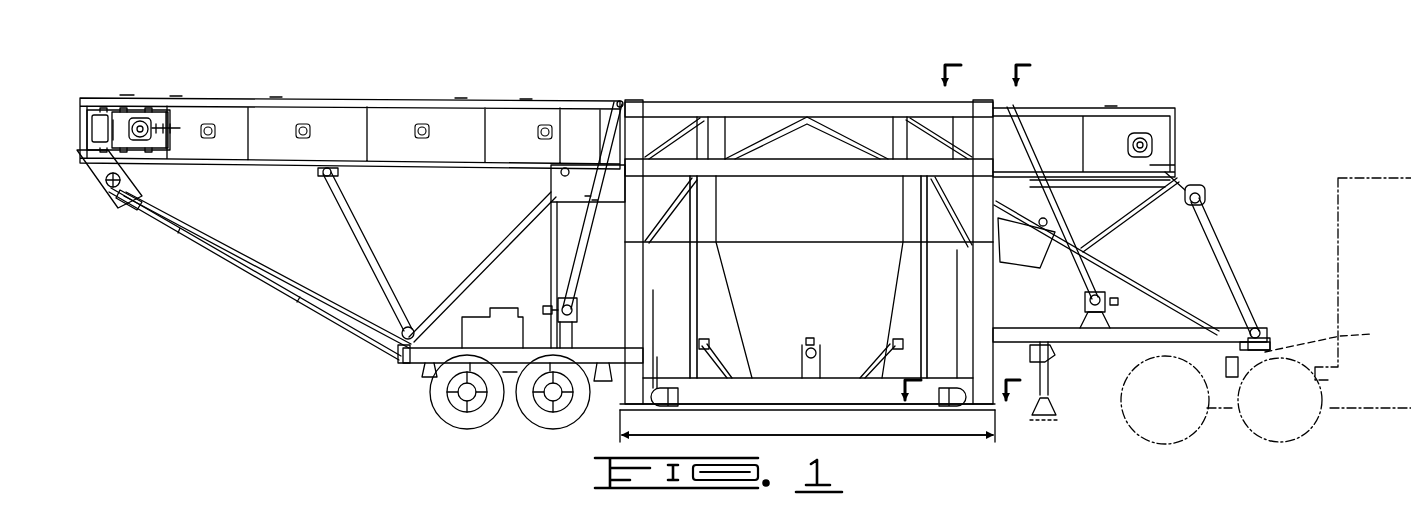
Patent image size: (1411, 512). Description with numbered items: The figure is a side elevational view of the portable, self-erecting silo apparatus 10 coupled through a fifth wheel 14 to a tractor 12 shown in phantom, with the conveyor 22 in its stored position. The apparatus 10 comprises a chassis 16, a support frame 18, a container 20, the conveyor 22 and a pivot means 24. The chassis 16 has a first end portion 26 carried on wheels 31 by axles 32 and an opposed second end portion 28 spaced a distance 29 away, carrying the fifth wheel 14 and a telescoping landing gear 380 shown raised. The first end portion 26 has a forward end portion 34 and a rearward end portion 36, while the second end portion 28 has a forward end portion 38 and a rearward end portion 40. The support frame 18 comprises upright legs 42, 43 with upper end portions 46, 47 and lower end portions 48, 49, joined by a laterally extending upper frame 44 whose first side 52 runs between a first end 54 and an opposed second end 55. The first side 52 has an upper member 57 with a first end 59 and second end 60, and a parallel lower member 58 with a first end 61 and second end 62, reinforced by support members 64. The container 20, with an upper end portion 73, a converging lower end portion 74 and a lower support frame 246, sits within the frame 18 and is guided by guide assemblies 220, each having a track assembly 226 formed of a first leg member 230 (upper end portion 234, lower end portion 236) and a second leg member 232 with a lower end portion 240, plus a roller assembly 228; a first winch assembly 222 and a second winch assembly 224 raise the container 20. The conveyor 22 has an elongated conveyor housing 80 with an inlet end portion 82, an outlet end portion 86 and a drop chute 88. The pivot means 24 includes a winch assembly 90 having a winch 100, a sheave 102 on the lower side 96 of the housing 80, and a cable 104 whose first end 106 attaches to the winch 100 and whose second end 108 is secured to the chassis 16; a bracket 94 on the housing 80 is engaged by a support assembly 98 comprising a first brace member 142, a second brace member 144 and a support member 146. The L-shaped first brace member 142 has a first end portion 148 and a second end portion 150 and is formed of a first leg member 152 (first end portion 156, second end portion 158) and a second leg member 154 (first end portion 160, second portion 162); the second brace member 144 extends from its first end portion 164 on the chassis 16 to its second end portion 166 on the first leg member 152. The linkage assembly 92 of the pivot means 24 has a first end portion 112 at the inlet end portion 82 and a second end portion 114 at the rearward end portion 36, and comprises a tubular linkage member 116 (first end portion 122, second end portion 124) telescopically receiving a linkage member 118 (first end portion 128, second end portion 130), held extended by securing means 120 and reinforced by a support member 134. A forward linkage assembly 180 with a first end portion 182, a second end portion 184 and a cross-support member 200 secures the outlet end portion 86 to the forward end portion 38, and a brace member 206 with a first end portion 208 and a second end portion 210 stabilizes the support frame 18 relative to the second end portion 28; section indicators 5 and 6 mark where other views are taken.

The portable, self-erecting silo apparatus 10 is at (1290, 125).
The tractor 12 is at (1398, 255).
The fifth wheel 14 is at (1330, 339).
The chassis 16 is at (398, 362).
The support frame 18 is at (973, 300).
The container 20 is at (792, 242).
The conveyor 22 is at (546, 99).
The pivot means 24 is at (352, 238).
The first end portion 26 is at (458, 420).
The opposed second end portion 28 is at (1170, 340).
The distance 29 is at (965, 445).
The wheels 31 is at (465, 405).
The axles 32 is at (462, 405).
The forward end portion 34 is at (605, 383).
The rearward end portion 36 is at (400, 368).
The forward end portion 38 is at (1272, 338).
The rearward end portion 40 is at (1000, 326).
The upright legs 42 is at (700, 272).
The upright legs 43 is at (962, 275).
The laterally extending upper frame 44 is at (860, 100).
The upper end portion 46 is at (634, 100).
The upper end portion 47 is at (978, 100).
The lower end portion 48 is at (807, 433).
The lower end portion 49 is at (1024, 352).
The first side 52 is at (800, 180).
The first end 54 is at (601, 149).
The opposed second end 55 is at (1002, 158).
The upper member 57 is at (825, 130).
The lower member 58 is at (780, 180).
The first end 59 is at (658, 103).
The opposed second end 60 is at (930, 110).
The first end 61 is at (760, 182).
The opposed second end 62 is at (940, 190).
The support members 64 is at (740, 138).
The upper end portion 73 is at (790, 138).
The lower end portion 74 is at (832, 379).
The conveyor housing 80 is at (462, 145).
The inlet end portion 82 is at (82, 112).
The opposed outlet end portion 86 is at (1172, 140).
The drop chute 88 is at (1108, 218).
The winch assembly 90 is at (412, 318).
The linkage assembly 92 is at (204, 250).
The bracket 94 is at (557, 173).
The lower side 96 is at (403, 160).
The support assembly 98 is at (552, 190).
The winch 100 is at (300, 296).
The sheave 102 is at (325, 170).
The cable 104 is at (365, 246).
The first end 106 is at (492, 320).
The second end 108 is at (305, 312).
The first end portion 112 is at (168, 236).
The opposed second end portion 114 is at (396, 356).
The tubular linkage member 116 is at (185, 224).
The linkage member 118 is at (305, 264).
The securing means 120 is at (268, 275).
The first end portion 122 is at (130, 186).
The opposed second end portion 124 is at (312, 266).
The first end portion 128 is at (280, 290).
The opposed second end portion 130 is at (395, 350).
The support member 134 is at (142, 200).
The first brace member 142 is at (550, 262).
The second brace member 144 is at (510, 290).
The support member 146 is at (560, 170).
The first end portion 148 is at (574, 329).
The second end portion 150 is at (610, 200).
The first leg member 152 is at (548, 296).
The second leg member 154 is at (598, 232).
The first end portion 156 is at (552, 332).
The opposed second end portion 158 is at (556, 230).
The first end portion 160 is at (588, 170).
The opposed second portion 162 is at (690, 170).
The first end portion 164 is at (402, 374).
The second end portion 166 is at (554, 212).
The forward linkage assembly 180 is at (1237, 258).
The first end portion 182 is at (1222, 222).
The opposed second end portion 184 is at (1252, 298).
The cross-support member 200 is at (1206, 196).
The brace member 206 is at (1100, 265).
The first end portion 208 is at (1168, 300).
The opposed second end portion 210 is at (1006, 204).
The guide assemblies 220 is at (692, 350).
The first winch assembly 222 is at (578, 312).
The second winch assembly 224 is at (1083, 297).
The track assembly 226 is at (678, 345).
The roller assembly 228 is at (652, 408).
The first leg member 230 is at (942, 240).
The second leg member 232 is at (705, 345).
The upper end portion 234 is at (690, 140).
The lower end portion 236 is at (680, 393).
The lower end portion 240 is at (642, 398).
The lower support frame 246 is at (818, 400).
The landing gear 380 is at (1050, 390).
The section line 5 is at (984, 85).
The section line 6 is at (960, 398).